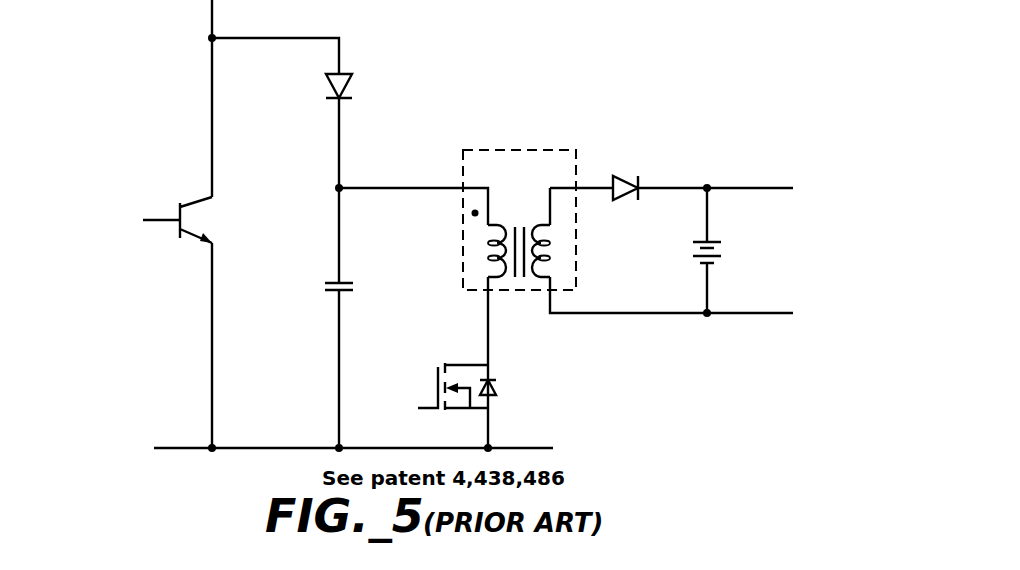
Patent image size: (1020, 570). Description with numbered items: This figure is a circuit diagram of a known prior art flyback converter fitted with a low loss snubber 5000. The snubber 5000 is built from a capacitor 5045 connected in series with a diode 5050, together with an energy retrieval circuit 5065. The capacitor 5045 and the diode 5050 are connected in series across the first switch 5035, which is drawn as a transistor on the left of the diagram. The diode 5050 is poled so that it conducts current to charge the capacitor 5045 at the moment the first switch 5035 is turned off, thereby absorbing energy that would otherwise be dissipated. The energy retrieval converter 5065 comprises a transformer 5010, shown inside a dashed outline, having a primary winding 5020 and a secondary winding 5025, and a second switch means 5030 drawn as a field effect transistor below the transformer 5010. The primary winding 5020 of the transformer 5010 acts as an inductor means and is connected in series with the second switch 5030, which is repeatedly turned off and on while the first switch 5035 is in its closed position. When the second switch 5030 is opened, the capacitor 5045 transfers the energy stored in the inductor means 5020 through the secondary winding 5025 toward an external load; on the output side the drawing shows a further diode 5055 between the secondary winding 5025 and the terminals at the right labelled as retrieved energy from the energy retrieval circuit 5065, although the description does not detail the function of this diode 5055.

The low loss snubber 5000 is at (733, 60).
The transformer 5010 is at (525, 150).
The primary winding 5020 is at (550, 243).
The secondary winding 5025 is at (502, 277).
The second switch means 5030 is at (430, 405).
The first switch 5035 is at (168, 219).
The capacitor 5045 is at (333, 292).
The diode 5050 is at (336, 100).
The rectifier diode 5055 is at (622, 178).
The energy retrieval circuit 5065 is at (785, 123).